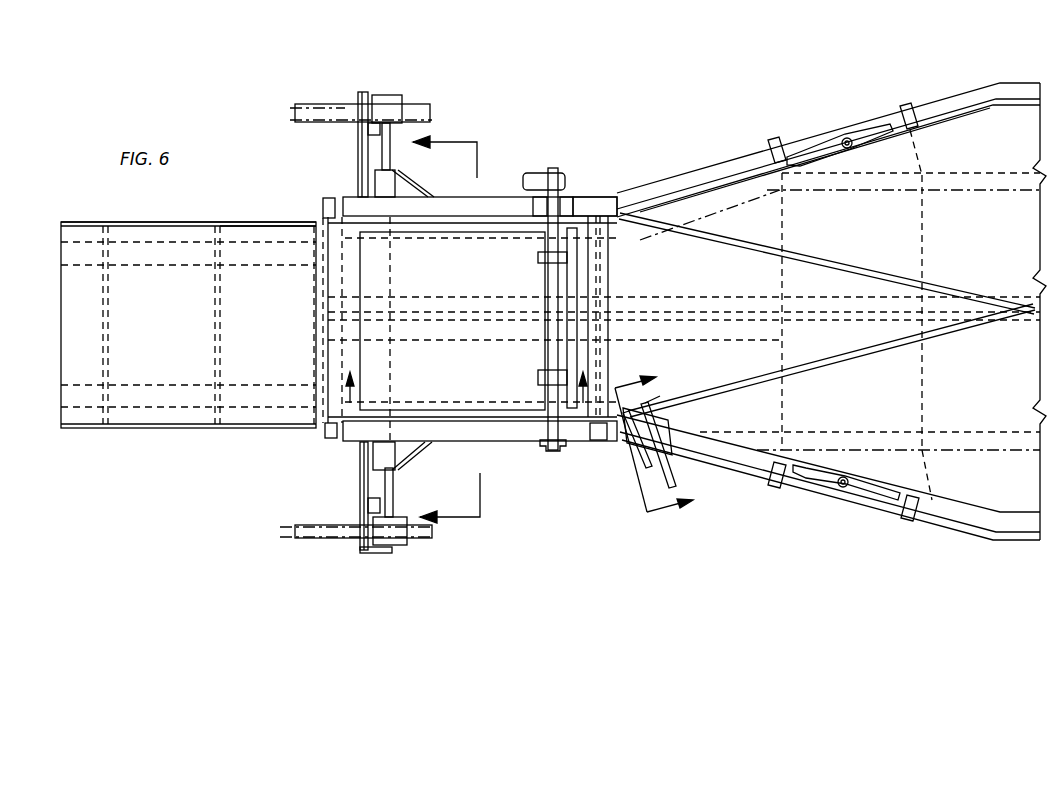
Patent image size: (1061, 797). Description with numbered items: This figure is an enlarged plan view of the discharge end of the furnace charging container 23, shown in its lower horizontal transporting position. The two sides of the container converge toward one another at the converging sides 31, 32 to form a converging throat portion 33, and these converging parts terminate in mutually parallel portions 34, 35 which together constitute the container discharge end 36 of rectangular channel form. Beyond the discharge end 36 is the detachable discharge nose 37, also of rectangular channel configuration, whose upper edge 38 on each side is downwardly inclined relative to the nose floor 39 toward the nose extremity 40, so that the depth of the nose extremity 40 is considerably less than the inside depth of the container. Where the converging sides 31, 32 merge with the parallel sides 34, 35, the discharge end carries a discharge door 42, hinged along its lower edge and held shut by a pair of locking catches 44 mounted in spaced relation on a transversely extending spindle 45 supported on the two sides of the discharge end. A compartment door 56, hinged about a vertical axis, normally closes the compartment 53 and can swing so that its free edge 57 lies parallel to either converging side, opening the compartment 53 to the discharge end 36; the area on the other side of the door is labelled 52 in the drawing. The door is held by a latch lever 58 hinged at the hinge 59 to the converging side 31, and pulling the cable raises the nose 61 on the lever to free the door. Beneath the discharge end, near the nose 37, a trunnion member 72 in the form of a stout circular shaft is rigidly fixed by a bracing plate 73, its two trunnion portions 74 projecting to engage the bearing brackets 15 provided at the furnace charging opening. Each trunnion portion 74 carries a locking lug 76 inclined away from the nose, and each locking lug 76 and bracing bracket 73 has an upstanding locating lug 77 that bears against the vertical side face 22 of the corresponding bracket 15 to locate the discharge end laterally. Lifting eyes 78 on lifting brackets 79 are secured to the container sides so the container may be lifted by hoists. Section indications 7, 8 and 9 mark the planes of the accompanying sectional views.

The section line 7- 7 is at (446, 334).
The section line 8- 8 is at (464, 374).
The section line 9- 9 is at (654, 447).
The bearing bracket 15 is at (343, 106).
The side face 22 is at (330, 125).
The container 23 is at (1034, 84).
The converging side 31 is at (750, 470).
The converging side 32 is at (700, 158).
The converging throat portion 33 is at (652, 160).
The parallel portion 34 is at (464, 190).
The parallel portion 35 is at (511, 441).
The container discharge end 36 is at (336, 198).
The discharge nose 37 is at (269, 226).
The upper edge 38 is at (171, 222).
The nose floor 39 is at (188, 325).
The nose extremity 40 is at (61, 318).
The discharge door 42 is at (578, 288).
The locking catch 44 is at (538, 258).
The spindle 45 is at (560, 200).
The tab 52 is at (970, 136).
The compartment 53 is at (936, 494).
The compartment door 56 is at (890, 360).
The free edge 57 is at (633, 417).
The latch lever 58 is at (669, 482).
The hinge 59 is at (650, 470).
The nose 61 is at (647, 403).
The trunnion member 72 is at (360, 475).
The bracing plate 73 is at (414, 176).
The trunnion portion 74 is at (386, 142).
The locking lug 76 is at (395, 126).
The locating lug 77 is at (368, 130).
The lifting eye 78 is at (844, 142).
The lifting bracket 79 is at (852, 140).